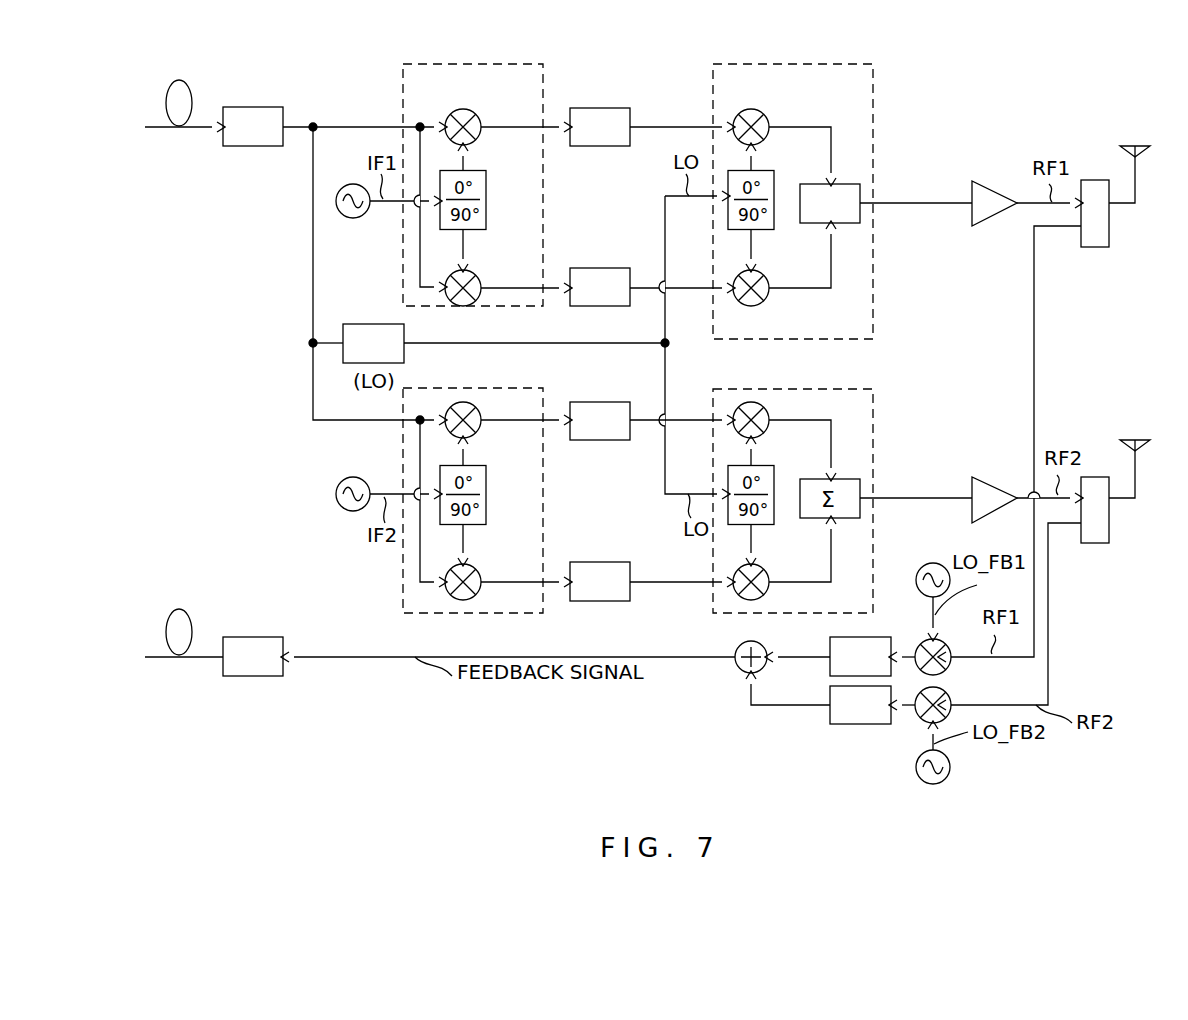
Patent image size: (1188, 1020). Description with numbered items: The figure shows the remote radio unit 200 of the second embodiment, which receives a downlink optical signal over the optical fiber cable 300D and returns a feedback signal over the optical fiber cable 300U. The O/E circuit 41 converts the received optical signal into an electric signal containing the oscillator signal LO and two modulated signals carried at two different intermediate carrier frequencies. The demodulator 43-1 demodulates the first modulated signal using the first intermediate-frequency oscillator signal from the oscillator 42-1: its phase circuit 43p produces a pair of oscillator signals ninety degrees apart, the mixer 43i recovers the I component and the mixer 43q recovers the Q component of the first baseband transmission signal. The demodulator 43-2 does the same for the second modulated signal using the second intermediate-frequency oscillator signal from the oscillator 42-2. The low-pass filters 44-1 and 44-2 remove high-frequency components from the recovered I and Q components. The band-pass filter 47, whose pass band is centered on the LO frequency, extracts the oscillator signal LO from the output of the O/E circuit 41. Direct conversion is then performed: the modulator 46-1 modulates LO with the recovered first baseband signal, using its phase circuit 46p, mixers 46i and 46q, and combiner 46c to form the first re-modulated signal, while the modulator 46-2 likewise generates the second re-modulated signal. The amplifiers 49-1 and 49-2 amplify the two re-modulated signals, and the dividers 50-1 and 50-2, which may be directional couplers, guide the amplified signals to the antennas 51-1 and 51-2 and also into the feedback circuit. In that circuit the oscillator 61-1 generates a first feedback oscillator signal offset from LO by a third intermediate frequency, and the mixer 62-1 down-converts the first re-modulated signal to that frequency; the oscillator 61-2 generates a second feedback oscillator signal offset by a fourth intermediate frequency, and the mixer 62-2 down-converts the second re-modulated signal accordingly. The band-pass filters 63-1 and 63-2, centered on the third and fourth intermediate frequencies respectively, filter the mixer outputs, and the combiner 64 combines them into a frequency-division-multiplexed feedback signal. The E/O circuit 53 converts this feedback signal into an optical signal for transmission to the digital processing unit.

The optical fiber cable 300D is at (182, 80).
The O/E circuit 41 is at (252, 107).
The oscillator 42-1 is at (355, 218).
The oscillator 42-2 is at (336, 496).
The demodulator 43-1 is at (543, 195).
The demodulator 43-2 is at (543, 490).
The mixer 43i is at (455, 112).
The phase circuit 43p is at (486, 185).
The mixer 43q is at (471, 274).
The low-pass filter 44-1 is at (583, 108).
The low-pass filter 44-2 is at (583, 402).
The modulator 46-1 is at (873, 97).
The modulator 46-2 is at (873, 396).
The mixer 46i is at (742, 112).
The phase circuit 46p is at (760, 230).
The mixer 46q is at (764, 300).
The combiner 46c is at (812, 184).
The band-pass filter 47 is at (404, 358).
The amplifier 49-1 is at (1000, 225).
The amplifier 49-2 is at (993, 477).
The divider 50-1 is at (1096, 247).
The divider 50-2 is at (1096, 543).
The antenna 51-1 is at (1140, 146).
The antenna 51-2 is at (1140, 440).
The E/O circuit 53 is at (245, 637).
The oscillator 61-1 is at (930, 563).
The oscillator 61-2 is at (951, 767).
The mixer 62-1 is at (922, 641).
The mixer 62-2 is at (946, 691).
The band-pass filter 63-1 is at (830, 647).
The band-pass filter 63-2 is at (860, 724).
The combiner 64 is at (737, 645).
The remote radio unit 200 is at (218, 726).
The optical fiber cable 300U is at (182, 609).